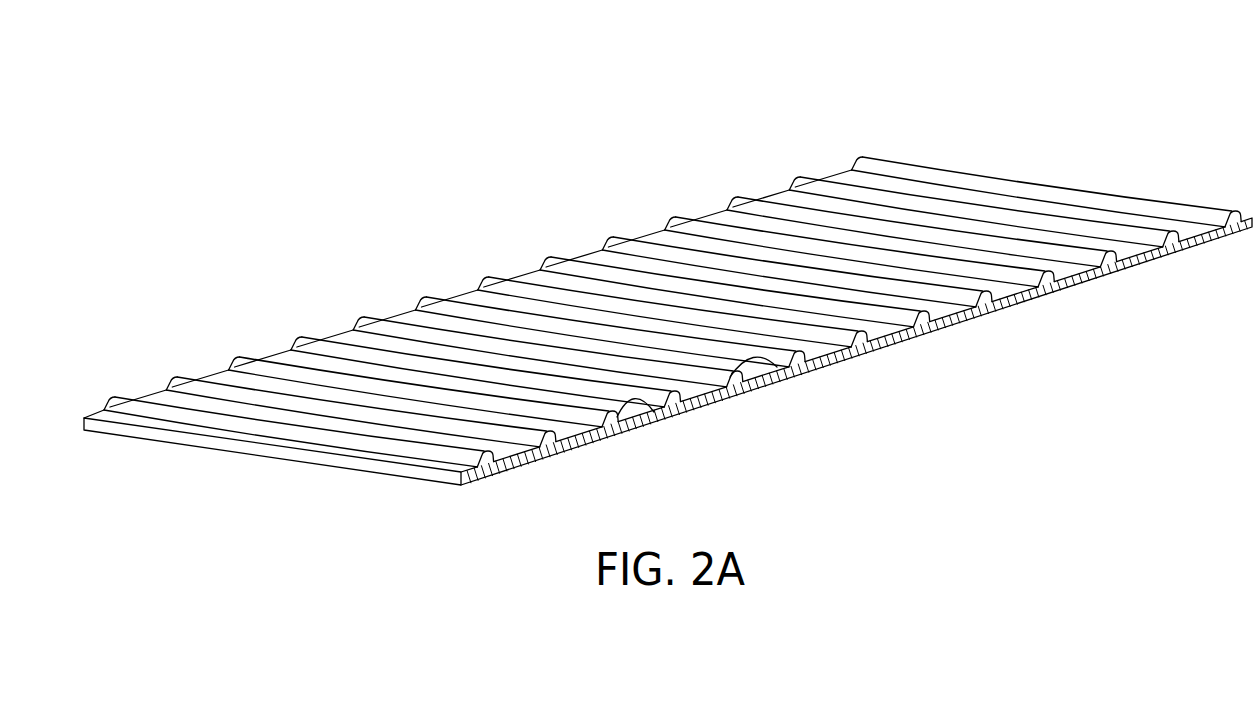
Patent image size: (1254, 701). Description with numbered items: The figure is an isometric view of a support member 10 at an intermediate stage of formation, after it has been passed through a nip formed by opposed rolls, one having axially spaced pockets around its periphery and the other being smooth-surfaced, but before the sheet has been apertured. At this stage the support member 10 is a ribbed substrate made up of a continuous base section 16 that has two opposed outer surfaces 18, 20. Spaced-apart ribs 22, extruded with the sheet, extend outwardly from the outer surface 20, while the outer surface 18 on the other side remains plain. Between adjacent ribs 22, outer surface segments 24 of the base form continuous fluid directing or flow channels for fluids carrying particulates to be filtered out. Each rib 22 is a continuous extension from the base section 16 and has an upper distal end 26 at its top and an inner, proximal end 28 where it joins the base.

The support member 10 is at (668, 289).
The continuous base section 16 is at (512, 458).
The outer surface 18 is at (827, 382).
The outer surface 20 is at (278, 346).
The spaced-apart ribs 22 is at (229, 363).
The outer surface segments 24 is at (314, 365).
The upper distal end 26 is at (654, 412).
The inner proximal end 28 is at (687, 418).